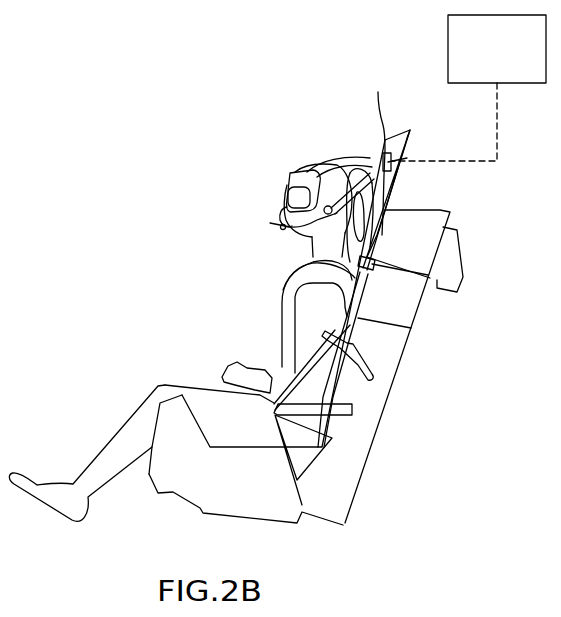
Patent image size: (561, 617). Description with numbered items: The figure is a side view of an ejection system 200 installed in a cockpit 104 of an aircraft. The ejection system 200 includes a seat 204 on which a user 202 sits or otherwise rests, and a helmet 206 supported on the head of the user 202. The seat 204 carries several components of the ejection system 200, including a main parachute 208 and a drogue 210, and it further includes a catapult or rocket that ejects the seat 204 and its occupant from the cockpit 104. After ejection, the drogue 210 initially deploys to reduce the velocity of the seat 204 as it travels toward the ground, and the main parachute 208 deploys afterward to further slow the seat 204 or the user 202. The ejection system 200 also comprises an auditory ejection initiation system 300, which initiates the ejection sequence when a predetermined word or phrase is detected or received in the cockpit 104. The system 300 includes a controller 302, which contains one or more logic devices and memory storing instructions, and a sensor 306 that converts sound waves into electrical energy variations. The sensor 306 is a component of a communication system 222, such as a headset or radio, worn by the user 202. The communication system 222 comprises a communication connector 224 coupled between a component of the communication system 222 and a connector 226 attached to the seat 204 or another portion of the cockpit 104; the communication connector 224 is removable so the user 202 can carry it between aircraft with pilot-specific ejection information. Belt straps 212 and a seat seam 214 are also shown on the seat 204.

The auditory ejection initiation system 300 is at (214, 124).
The controller 302 is at (497, 49).
The cockpit 104 is at (284, 126).
The sensor 306 is at (272, 223).
The user 202 is at (275, 297).
The ejection system 200 is at (404, 366).
The seat 204 is at (377, 428).
The helmet 206 is at (343, 172).
The main parachute 208 is at (437, 232).
The drogue 210 is at (453, 273).
The lap belt 212 is at (395, 232).
The seat back seam 214 is at (372, 268).
The communication system 222 is at (337, 172).
The communication connector 224 is at (378, 152).
The connector 226 is at (403, 134).